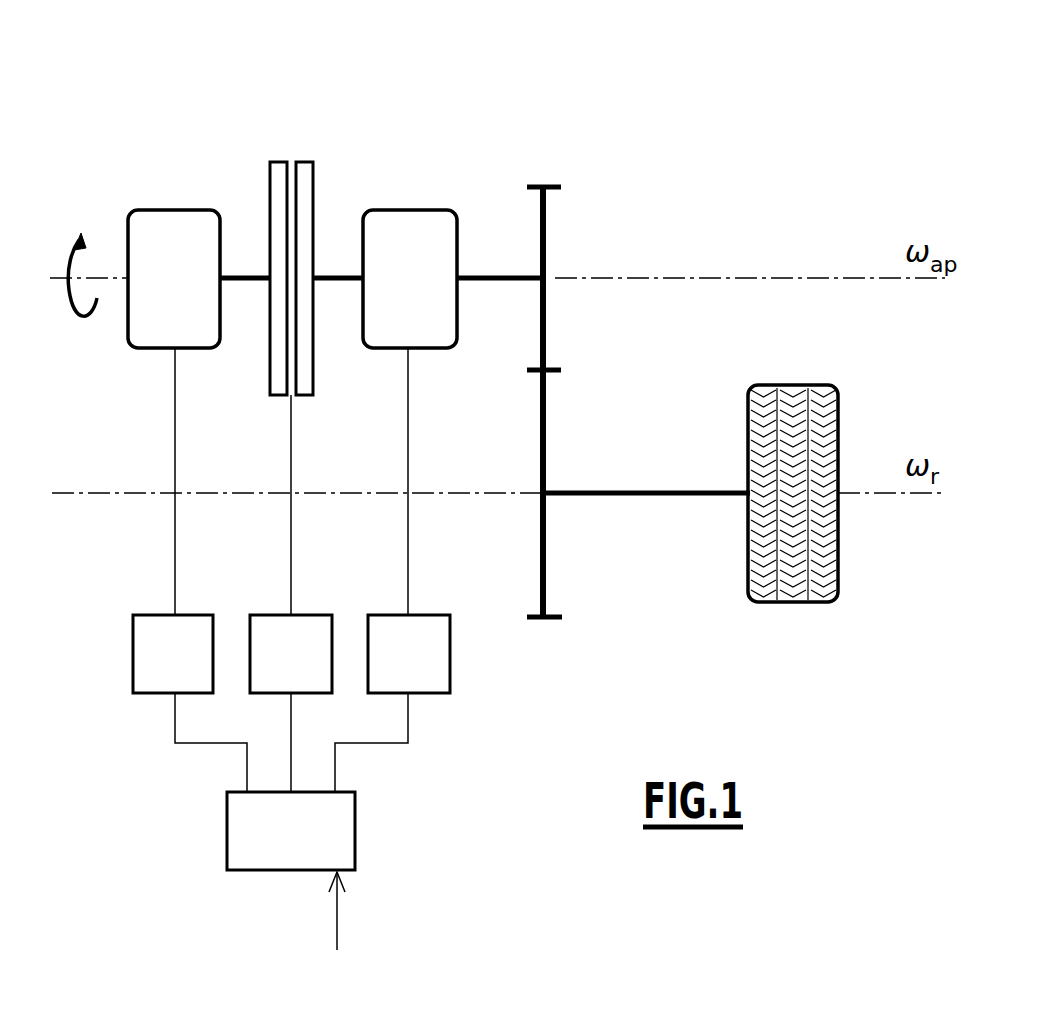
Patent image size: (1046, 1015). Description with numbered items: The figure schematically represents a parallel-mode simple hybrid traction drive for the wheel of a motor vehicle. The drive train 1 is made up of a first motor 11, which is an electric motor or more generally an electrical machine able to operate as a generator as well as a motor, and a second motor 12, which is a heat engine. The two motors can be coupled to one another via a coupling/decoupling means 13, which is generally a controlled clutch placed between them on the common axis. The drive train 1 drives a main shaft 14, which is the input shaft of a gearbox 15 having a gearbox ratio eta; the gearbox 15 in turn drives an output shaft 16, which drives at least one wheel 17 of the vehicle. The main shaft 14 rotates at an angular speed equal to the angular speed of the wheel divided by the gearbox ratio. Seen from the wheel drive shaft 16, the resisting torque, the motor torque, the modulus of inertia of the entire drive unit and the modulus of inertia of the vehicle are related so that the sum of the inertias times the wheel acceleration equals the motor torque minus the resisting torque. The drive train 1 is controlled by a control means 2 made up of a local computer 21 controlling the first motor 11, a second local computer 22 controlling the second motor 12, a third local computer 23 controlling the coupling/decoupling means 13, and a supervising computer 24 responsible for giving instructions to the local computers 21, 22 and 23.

The drive train 1 is at (232, 101).
The control means 2 is at (257, 882).
The first motor 11 is at (405, 222).
The second motor 12 is at (175, 222).
The coupling/decoupling means 13 is at (282, 168).
The main shaft 14 is at (496, 275).
The gearbox 15 is at (546, 325).
The output shaft 16 is at (668, 490).
The wheel 17 is at (825, 417).
The local computer 21 is at (409, 654).
The second local computer 22 is at (173, 654).
The third local computer 23 is at (291, 654).
The supervising computer 24 is at (291, 831).